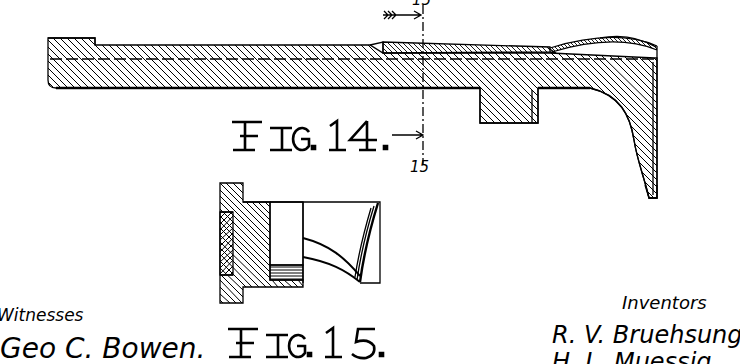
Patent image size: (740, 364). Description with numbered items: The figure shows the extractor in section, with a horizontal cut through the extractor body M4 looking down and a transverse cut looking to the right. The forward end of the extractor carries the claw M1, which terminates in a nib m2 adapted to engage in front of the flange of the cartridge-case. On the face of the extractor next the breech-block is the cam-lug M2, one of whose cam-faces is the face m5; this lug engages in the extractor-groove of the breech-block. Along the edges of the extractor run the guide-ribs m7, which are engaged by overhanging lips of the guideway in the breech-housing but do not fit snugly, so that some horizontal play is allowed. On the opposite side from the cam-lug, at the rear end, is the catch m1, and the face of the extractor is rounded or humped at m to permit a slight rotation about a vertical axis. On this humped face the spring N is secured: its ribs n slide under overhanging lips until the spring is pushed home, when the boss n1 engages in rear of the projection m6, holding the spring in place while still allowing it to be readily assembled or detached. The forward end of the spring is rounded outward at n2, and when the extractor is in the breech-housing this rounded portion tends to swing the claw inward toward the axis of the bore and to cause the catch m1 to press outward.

In FIG. 14, the bar M4 is at (352, 118).
In FIG. 14, the catch m1 is at (71, 31).
In FIG. 14, the humped face of extractor m is at (378, 37).
In FIG. 14, the spring N is at (449, 45).
In FIG. 15, the spring N is at (222, 243).
In FIG. 14, the boss n1 is at (551, 49).
In FIG. 14, the projection m6 is at (556, 50).
In FIG. 14, the rounded forward end of spring n2 is at (615, 36).
In FIG. 14, the cam-lug M2 is at (510, 125).
In FIG. 15, the cam-lug M2 is at (288, 212).
In FIG. 14, the claw M1 is at (625, 129).
In FIG. 15, the claw M1 is at (243, 186).
In FIG. 14, the nib m2 is at (645, 200).
In FIG. 15, the nib m2 is at (380, 247).
In FIG. 15, the ribs of spring n is at (233, 275).
In FIG. 15, the guide-ribs m7 is at (243, 298).
In FIG. 15, the cam-face m5 is at (304, 284).